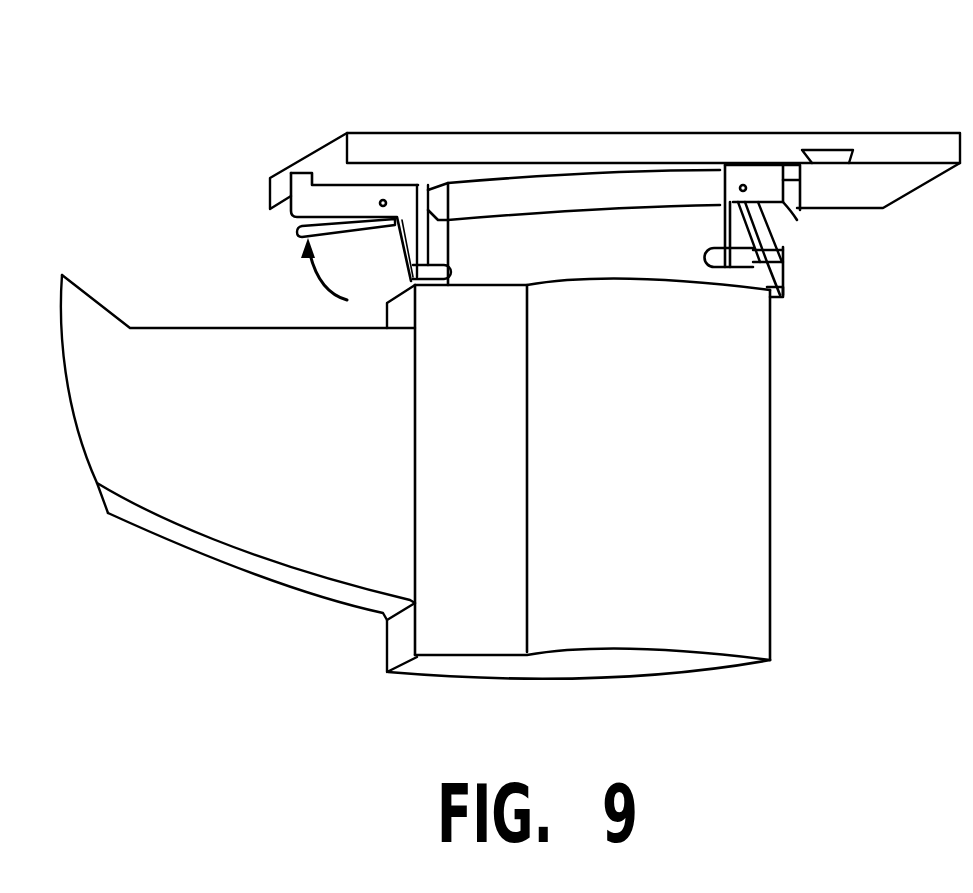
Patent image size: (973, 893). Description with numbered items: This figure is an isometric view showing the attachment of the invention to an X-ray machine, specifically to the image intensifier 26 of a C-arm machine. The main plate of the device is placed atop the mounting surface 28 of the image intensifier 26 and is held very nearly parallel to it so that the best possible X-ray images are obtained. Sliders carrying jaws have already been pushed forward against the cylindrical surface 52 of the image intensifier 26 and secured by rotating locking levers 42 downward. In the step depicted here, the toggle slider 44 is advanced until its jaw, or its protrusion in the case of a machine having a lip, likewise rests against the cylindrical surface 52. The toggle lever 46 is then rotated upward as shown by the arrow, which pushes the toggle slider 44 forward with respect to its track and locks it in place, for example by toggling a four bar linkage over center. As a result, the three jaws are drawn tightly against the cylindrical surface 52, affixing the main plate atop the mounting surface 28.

The image intensifier 26 is at (732, 523).
The mounting surface 28 is at (518, 195).
The locking lever 42 is at (777, 293).
The toggle slider 44 is at (330, 197).
The toggle lever 46 is at (302, 240).
The cylindrical surface 52 is at (782, 255).